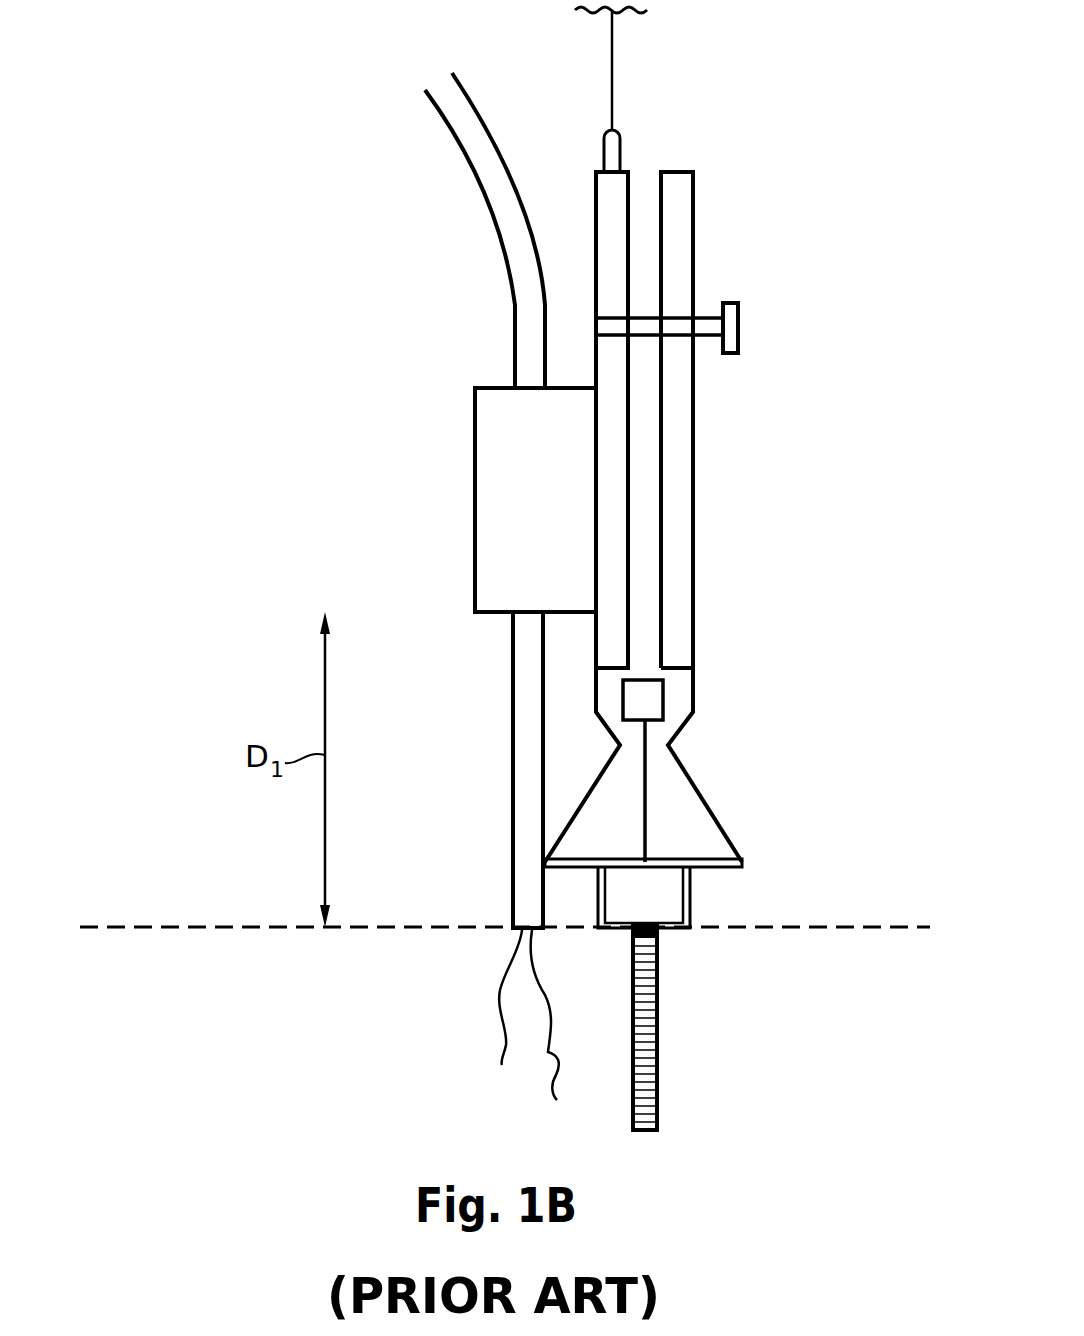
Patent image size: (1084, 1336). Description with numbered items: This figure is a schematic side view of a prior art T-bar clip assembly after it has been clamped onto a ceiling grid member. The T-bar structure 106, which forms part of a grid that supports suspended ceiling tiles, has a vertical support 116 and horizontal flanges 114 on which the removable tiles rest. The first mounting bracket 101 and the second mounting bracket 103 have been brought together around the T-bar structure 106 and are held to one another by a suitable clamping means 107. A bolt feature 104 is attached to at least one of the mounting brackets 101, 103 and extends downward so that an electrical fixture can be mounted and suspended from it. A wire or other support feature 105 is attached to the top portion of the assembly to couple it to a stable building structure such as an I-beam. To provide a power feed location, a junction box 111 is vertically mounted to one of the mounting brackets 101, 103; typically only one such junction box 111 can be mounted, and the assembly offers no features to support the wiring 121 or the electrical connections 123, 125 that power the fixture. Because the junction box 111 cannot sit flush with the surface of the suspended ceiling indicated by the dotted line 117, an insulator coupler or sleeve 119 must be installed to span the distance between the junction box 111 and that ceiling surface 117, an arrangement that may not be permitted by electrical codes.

The first mounting bracket 101 is at (694, 492).
The second mounting bracket 103 is at (597, 172).
The bolt feature 104 is at (657, 1052).
The wire or other support feature 105 is at (614, 28).
The T-bar structure 106 is at (662, 829).
The clamping means 107 is at (740, 325).
The junction box 111 is at (474, 495).
The horizontal flanges 114 is at (645, 870).
The rod 116 is at (645, 793).
The surface of the suspended ceiling 117 is at (113, 930).
The insulator coupler or sleeve 119 is at (513, 748).
The wiring 121 is at (473, 172).
The electrical connection 123 is at (500, 1036).
The electrical connection 125 is at (556, 1033).